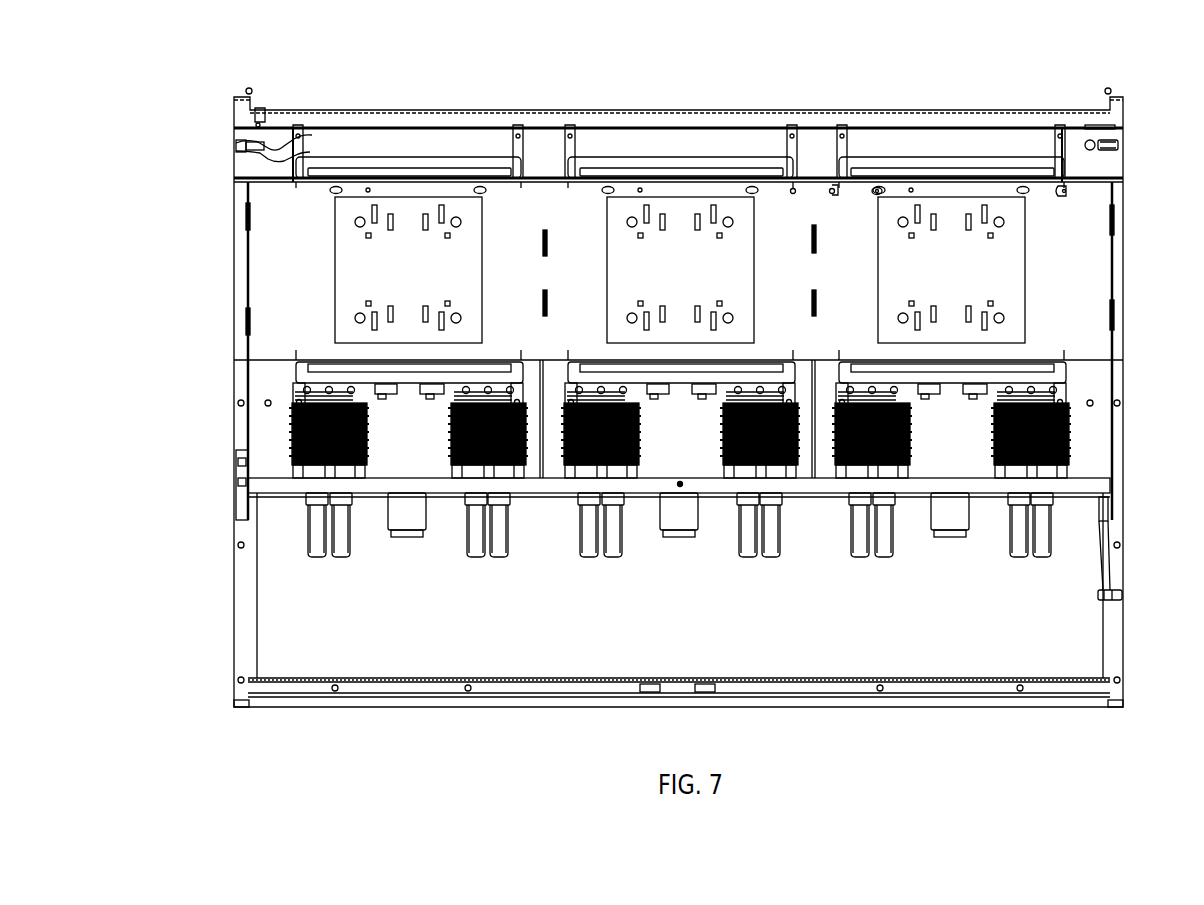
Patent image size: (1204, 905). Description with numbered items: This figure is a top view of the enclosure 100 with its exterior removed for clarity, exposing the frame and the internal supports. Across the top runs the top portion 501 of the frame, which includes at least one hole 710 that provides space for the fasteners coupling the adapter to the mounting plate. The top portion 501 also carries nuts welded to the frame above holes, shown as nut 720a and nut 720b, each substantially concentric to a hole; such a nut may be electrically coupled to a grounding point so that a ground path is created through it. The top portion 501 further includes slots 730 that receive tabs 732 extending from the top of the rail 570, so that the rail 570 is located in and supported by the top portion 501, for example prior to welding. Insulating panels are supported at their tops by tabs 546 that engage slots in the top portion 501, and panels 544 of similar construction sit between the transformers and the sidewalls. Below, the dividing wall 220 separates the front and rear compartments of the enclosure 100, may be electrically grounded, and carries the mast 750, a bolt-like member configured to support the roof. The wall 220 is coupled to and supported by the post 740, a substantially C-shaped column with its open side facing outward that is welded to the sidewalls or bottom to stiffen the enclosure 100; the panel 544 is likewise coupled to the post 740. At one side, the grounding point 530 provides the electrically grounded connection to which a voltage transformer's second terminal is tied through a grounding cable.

The enclosure 100 is at (238, 80).
The hole 710 is at (400, 222).
The top portion 501 is at (585, 202).
The rail 570 is at (781, 148).
The slots 730 is at (795, 190).
The nut 720b is at (880, 192).
The nut 720a is at (1065, 190).
The tabs 732 is at (835, 190).
The tabs 546 is at (812, 241).
The panels 544 is at (243, 420).
The post 740 is at (247, 507).
The wall 220 is at (277, 485).
The mast 750 is at (680, 484).
The grounding point 530 is at (1120, 596).